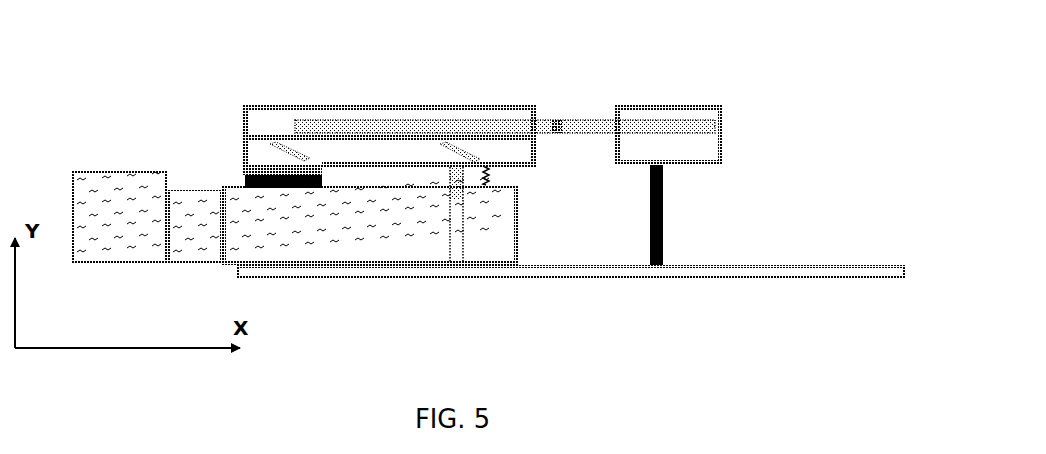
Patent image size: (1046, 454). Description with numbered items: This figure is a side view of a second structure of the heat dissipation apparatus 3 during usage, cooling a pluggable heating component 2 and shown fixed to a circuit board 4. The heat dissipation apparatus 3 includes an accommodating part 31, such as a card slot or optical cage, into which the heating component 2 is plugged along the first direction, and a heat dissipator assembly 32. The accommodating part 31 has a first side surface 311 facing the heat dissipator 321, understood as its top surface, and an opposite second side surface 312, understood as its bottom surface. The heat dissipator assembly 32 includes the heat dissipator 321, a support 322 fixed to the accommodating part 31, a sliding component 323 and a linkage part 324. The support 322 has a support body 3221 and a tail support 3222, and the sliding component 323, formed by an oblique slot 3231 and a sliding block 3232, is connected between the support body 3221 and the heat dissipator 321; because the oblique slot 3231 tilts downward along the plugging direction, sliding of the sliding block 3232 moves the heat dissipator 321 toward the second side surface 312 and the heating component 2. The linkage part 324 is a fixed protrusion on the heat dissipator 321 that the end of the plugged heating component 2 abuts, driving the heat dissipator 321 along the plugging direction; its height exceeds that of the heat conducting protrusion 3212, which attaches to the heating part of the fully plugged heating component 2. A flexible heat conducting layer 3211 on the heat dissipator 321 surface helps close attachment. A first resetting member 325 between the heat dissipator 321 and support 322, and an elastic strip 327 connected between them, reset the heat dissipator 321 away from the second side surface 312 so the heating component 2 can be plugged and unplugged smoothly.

The heating component 2 is at (108, 185).
The heat dissipation apparatus 3 is at (463, 141).
The circuit board 4 is at (263, 267).
The accommodating part 31 is at (409, 232).
The first side surface 311 is at (498, 189).
The second side surface 312 is at (492, 260).
The heat dissipator assembly 32 is at (479, 117).
The heat dissipator 321 is at (443, 108).
The support 322 is at (463, 166).
The support body 3221 is at (247, 142).
The tail support 3222 is at (672, 108).
The sliding component 323 is at (296, 107).
The oblique slot 3231 is at (292, 150).
The sliding block 3232 is at (280, 148).
The linkage part 324 is at (444, 197).
The first resetting member 325 is at (487, 182).
The elastic strip 327 is at (557, 121).
The flexible heat conducting layer 3211 is at (246, 175).
The heat conducting protrusion 3212 is at (245, 170).